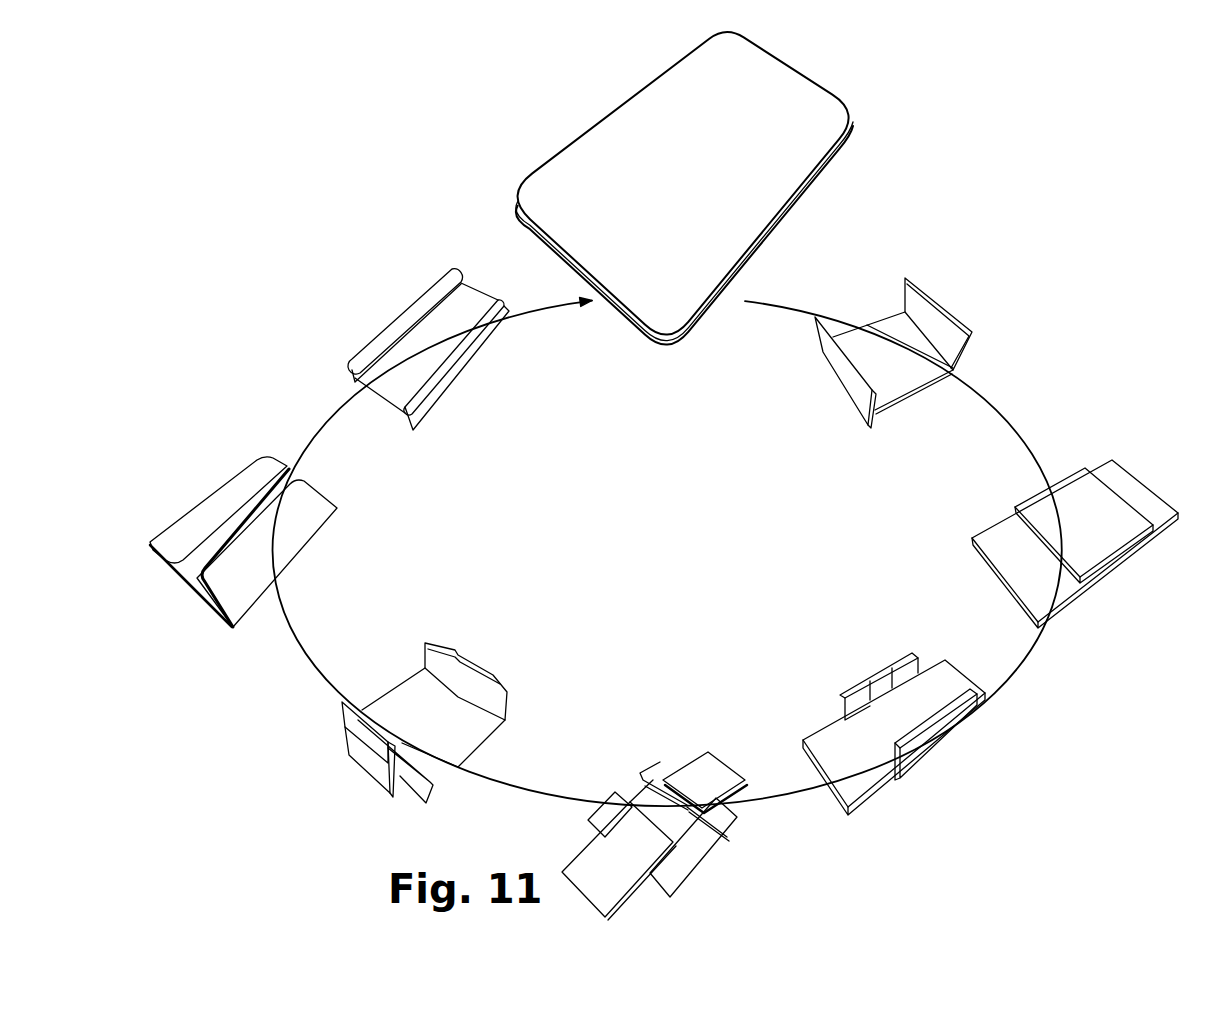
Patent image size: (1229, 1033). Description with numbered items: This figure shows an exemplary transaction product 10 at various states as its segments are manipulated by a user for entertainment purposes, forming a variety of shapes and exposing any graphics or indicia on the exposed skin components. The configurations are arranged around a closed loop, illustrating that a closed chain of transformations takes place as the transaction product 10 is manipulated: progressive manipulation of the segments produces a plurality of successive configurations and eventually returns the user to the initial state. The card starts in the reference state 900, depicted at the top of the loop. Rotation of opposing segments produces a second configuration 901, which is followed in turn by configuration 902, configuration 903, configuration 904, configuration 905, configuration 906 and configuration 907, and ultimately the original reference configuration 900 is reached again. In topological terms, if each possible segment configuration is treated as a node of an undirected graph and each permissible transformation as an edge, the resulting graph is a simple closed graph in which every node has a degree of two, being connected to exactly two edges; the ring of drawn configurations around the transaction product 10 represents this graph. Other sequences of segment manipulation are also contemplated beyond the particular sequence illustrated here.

The transaction product 10 is at (843, 78).
The reference state 900 is at (673, 341).
The second configuration 901 is at (957, 301).
The configuration 902 is at (1147, 473).
The configuration 903 is at (952, 755).
The configuration 904 is at (704, 742).
The configuration 905 is at (487, 660).
The configuration 906 is at (314, 546).
The configuration 907 is at (481, 382).